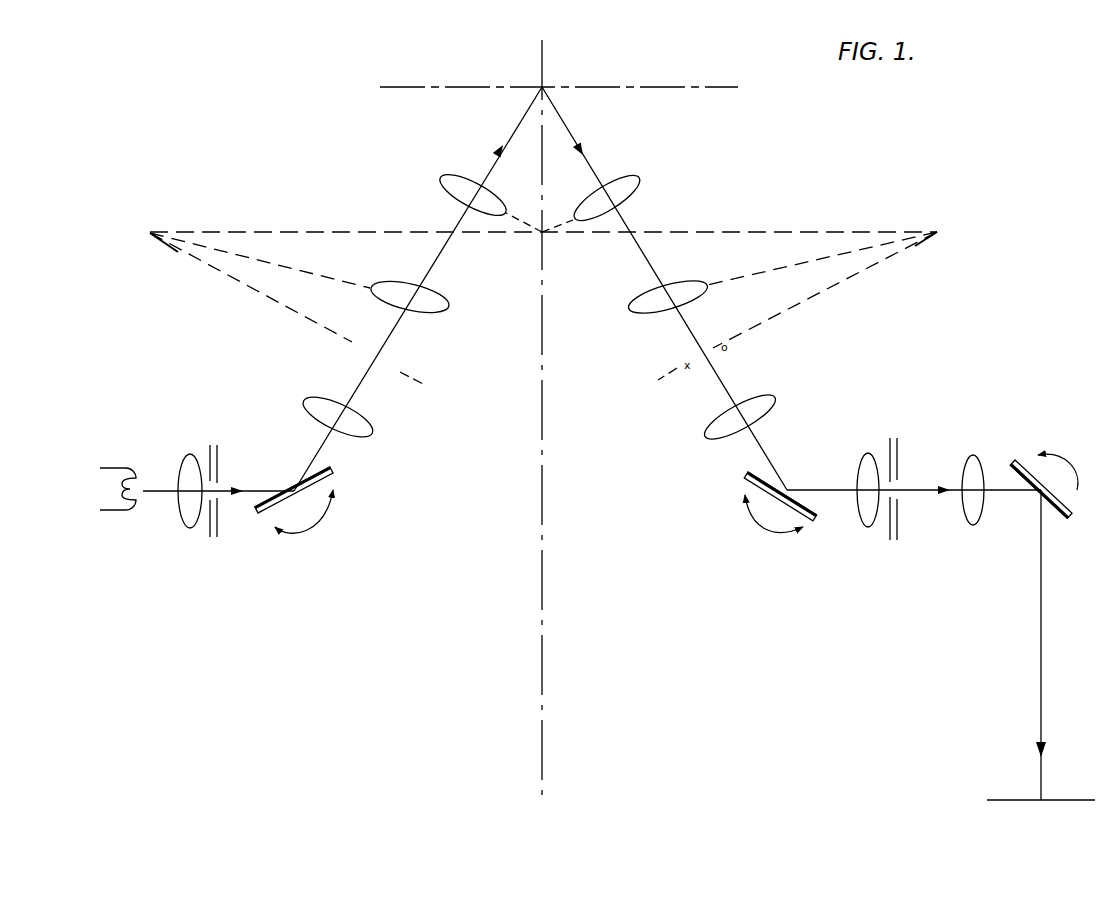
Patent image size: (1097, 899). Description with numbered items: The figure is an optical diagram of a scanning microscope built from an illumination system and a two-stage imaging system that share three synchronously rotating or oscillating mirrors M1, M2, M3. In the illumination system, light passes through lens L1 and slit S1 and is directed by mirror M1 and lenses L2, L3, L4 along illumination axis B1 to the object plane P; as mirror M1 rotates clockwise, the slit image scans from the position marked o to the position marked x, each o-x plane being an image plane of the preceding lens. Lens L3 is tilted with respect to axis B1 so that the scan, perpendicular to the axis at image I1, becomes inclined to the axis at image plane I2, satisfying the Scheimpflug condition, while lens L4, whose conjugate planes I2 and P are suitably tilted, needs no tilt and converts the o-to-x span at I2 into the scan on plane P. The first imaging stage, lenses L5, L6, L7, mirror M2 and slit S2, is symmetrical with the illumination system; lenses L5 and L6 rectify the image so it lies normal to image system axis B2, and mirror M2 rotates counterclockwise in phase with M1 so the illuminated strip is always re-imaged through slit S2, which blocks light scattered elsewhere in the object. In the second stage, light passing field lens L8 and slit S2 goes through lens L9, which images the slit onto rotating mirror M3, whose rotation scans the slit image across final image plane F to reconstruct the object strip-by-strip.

The object plane P is at (546, 50).
The lens L1 is at (205, 425).
The slit S1 is at (224, 495).
The mirror M1 is at (336, 474).
The lens L2 is at (326, 394).
The image I1 is at (380, 368).
The lens L3 is at (434, 292).
The illumination axis B1 is at (402, 326).
The image plane I2 is at (447, 223).
The lens L4 is at (452, 175).
The lens L5 is at (638, 173).
The lens L6 is at (643, 290).
The image system axis B2 is at (690, 337).
The lens L7 is at (772, 398).
The mirror M2 is at (748, 472).
The field lens L8 is at (872, 453).
The slit S2 is at (900, 495).
The lens L9 is at (973, 528).
The mirror M3 is at (1020, 457).
The final image plane F is at (1002, 793).